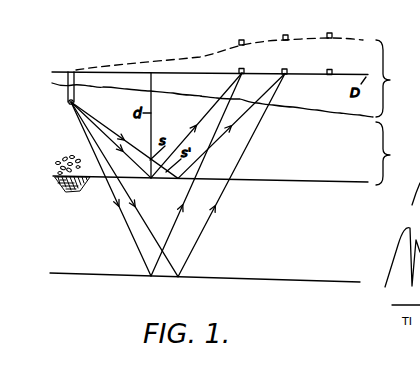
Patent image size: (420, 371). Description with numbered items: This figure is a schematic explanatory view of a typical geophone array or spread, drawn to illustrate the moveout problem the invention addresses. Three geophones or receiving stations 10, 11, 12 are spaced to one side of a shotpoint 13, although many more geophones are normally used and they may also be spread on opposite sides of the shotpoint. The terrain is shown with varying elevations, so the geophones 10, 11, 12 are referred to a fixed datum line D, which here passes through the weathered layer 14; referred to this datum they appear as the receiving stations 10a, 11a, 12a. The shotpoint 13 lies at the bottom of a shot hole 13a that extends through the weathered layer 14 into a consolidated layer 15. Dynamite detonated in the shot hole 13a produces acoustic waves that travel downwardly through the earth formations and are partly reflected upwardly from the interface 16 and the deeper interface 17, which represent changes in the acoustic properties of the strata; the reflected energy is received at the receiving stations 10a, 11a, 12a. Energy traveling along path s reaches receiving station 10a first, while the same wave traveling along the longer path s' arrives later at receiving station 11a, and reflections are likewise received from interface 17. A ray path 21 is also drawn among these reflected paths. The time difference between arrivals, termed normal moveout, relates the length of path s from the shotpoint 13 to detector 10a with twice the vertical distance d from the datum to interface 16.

The geophone 10 is at (243, 33).
The geophone 11 is at (287, 30).
The geophone 12 is at (332, 29).
The receiving station 10a is at (245, 69).
The receiving station 11a is at (287, 69).
The receiving station 12a is at (334, 70).
The shotpoint 13 is at (67, 102).
The shot hole 13a is at (49, 83).
The weathered layer 14 is at (232, 78).
The consolidated layer 15 is at (394, 153).
The interface 16 is at (269, 179).
The interface 17 is at (285, 281).
The reflected ray path 21 is at (221, 141).